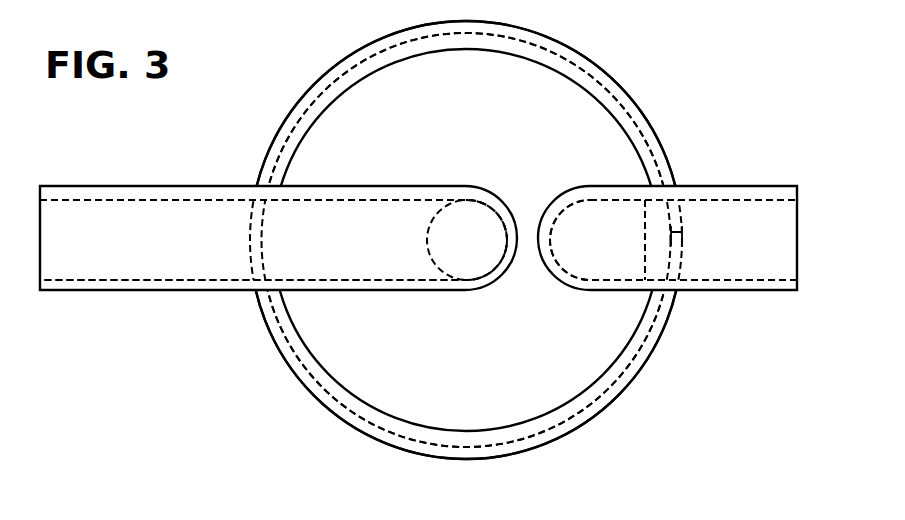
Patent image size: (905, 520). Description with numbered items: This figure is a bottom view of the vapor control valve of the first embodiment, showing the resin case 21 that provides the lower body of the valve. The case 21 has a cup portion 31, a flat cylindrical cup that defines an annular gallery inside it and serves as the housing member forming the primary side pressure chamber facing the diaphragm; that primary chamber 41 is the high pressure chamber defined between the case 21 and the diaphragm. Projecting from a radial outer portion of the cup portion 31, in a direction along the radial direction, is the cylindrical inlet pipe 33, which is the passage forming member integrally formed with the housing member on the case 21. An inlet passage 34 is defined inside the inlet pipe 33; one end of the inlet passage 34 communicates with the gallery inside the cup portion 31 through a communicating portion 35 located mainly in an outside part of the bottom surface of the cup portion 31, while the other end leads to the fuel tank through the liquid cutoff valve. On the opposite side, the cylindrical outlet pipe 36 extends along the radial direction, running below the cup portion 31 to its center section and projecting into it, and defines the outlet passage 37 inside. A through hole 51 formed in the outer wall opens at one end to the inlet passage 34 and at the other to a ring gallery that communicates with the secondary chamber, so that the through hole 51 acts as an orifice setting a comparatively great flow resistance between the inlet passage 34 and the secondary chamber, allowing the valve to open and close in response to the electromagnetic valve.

The case 21 is at (667, 158).
The cup portion 31 is at (277, 133).
The inlet pipe 33 is at (758, 187).
The inlet passage 34 is at (708, 228).
The communicating portion 35 is at (652, 350).
The outlet pipe 36 is at (165, 186).
The outlet passage 37 is at (120, 235).
The primary chamber 41 is at (583, 238).
The through hole 51 is at (681, 240).